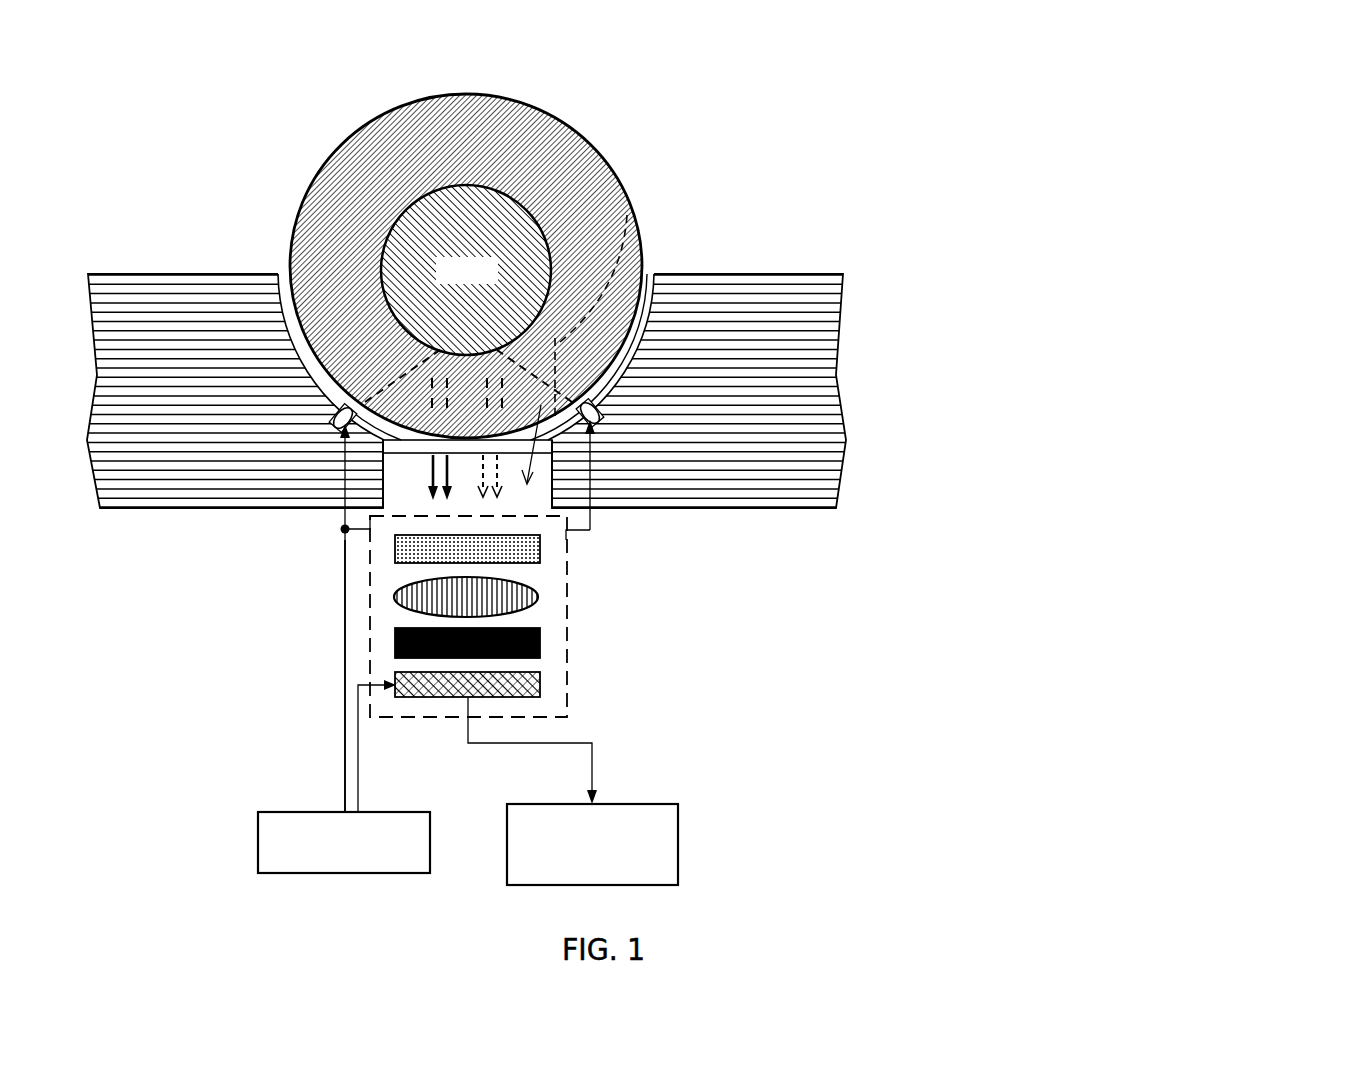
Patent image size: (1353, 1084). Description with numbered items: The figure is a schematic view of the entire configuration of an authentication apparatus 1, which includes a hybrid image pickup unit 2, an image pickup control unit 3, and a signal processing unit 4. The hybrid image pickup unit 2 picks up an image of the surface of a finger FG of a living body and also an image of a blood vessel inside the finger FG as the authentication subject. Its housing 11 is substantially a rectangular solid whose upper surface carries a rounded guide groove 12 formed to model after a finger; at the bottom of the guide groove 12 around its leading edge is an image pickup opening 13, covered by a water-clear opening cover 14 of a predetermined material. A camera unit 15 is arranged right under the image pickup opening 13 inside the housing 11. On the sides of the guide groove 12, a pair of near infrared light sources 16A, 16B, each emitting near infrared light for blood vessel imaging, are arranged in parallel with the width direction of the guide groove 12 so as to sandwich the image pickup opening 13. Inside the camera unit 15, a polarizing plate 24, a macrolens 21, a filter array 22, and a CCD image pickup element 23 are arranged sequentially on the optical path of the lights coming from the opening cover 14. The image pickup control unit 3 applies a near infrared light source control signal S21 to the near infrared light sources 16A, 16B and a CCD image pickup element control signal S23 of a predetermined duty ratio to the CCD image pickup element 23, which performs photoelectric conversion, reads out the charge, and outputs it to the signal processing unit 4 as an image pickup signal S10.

The authentication apparatus 1 is at (974, 71).
The hybrid image pickup unit 2 is at (1078, 265).
The image pickup control unit 3 is at (432, 842).
The signal processing unit 4 is at (680, 842).
The housing 11 is at (101, 274).
The guide groove 12 is at (290, 316).
The image pickup opening 13 is at (630, 212).
The opening cover 14 is at (652, 278).
The camera unit 15 is at (716, 623).
The near infrared light source 16A is at (343, 428).
The near infrared light source 16B is at (597, 420).
The macrolens 21 is at (540, 598).
The filter array 22 is at (540, 640).
The CCD image pickup element 23 is at (540, 675).
The polarizing plate 24 is at (540, 548).
The image pickup signal S10 is at (593, 764).
The near infrared light source control signal S21 is at (343, 624).
The CCD image pickup element control signal S23 is at (359, 772).
The finger FG is at (516, 101).